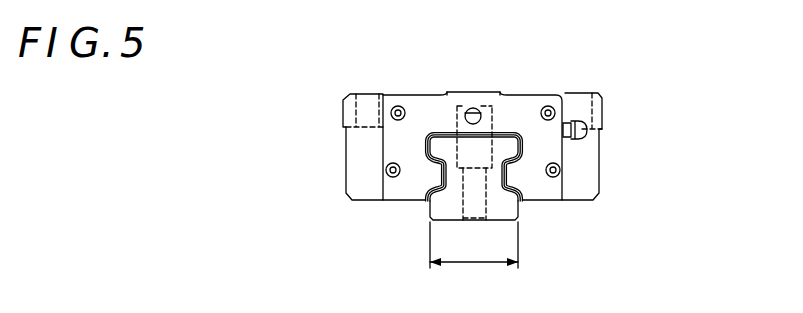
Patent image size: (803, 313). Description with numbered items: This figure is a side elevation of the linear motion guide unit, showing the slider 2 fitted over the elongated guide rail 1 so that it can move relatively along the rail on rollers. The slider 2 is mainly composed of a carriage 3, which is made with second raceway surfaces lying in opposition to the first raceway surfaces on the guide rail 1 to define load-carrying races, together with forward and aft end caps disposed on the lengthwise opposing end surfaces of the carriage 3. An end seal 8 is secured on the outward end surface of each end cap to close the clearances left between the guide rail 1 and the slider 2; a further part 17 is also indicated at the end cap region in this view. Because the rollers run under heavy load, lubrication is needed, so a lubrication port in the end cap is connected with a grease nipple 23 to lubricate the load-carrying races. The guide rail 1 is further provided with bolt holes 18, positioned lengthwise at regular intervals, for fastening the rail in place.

The guide rail 1 is at (435, 207).
The slider 2 is at (551, 90).
The carriage 3 is at (363, 158).
The end seal 8 is at (423, 118).
The end seal 17 is at (362, 92).
The bolt hole 18 is at (487, 197).
The grease nipple 23 is at (588, 128).